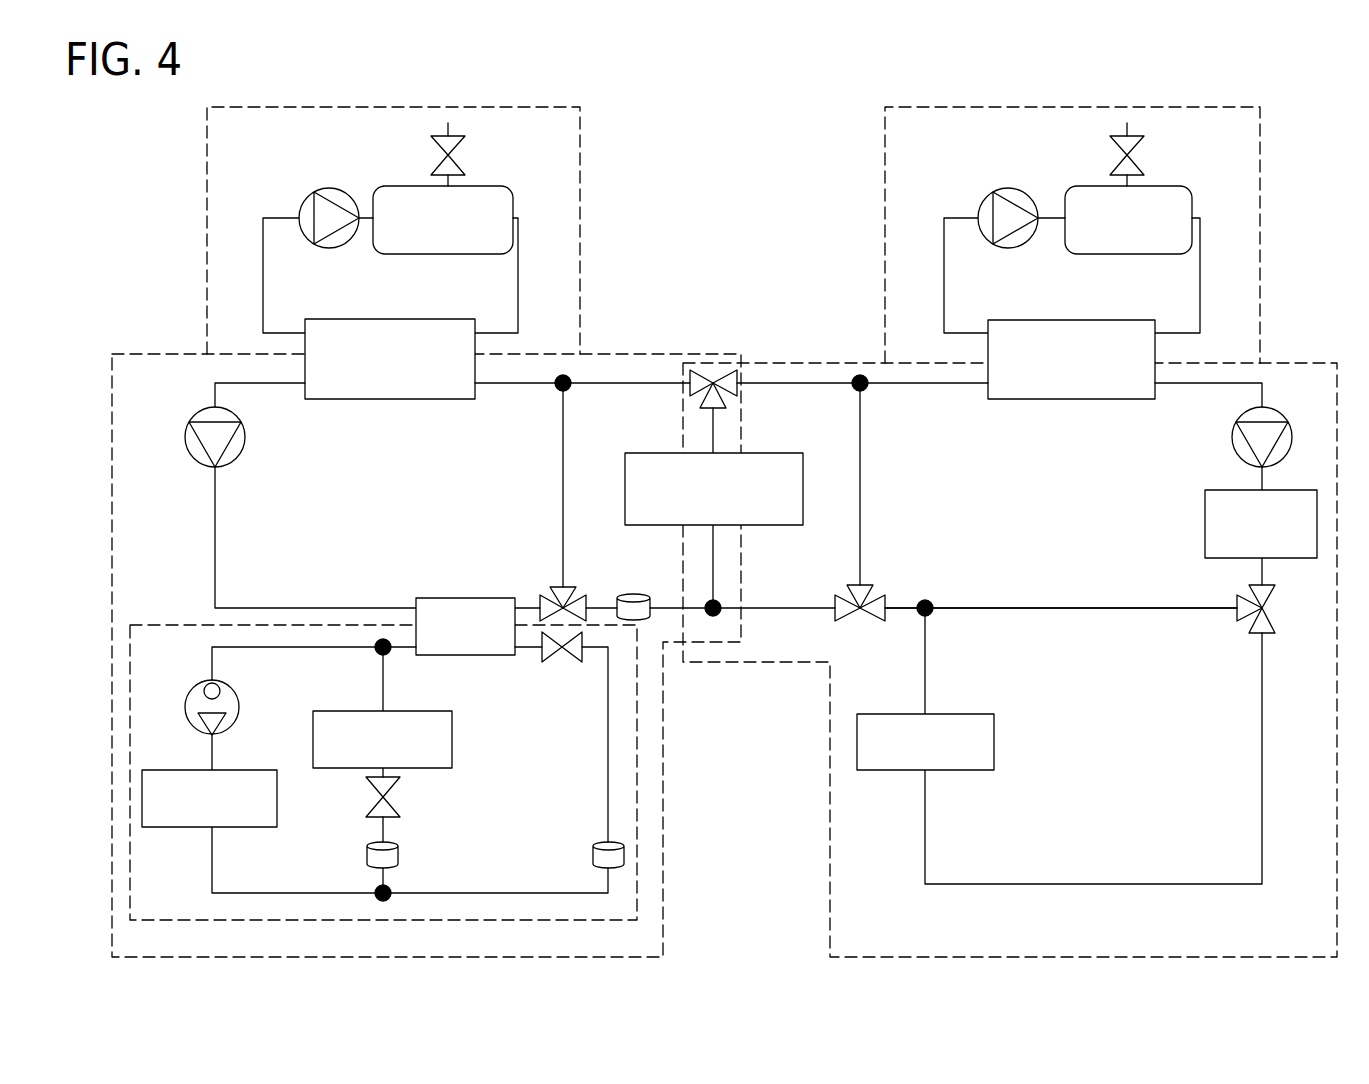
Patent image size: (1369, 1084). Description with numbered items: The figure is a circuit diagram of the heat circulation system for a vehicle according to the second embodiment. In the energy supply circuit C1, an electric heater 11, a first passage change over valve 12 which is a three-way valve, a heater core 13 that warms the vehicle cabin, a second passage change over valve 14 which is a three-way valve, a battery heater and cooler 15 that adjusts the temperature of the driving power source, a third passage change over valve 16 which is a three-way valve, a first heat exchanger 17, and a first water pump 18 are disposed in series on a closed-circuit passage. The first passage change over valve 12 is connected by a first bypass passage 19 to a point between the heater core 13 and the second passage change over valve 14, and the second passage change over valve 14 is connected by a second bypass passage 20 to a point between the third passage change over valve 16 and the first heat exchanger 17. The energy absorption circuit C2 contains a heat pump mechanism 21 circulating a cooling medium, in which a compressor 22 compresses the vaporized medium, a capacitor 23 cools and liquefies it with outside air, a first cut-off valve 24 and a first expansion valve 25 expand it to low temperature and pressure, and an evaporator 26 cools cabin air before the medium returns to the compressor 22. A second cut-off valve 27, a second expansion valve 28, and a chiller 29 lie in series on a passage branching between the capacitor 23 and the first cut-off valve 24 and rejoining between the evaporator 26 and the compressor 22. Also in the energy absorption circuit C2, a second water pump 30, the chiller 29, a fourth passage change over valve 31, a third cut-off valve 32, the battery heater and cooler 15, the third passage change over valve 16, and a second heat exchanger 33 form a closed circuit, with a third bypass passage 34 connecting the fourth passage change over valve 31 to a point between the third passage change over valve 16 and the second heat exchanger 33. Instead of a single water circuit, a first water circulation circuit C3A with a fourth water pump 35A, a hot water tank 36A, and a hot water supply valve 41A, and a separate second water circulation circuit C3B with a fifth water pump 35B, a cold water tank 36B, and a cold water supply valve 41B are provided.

The electric heater 11 is at (1205, 527).
The first passage change over valve 12 is at (1270, 615).
The heater core 13 is at (970, 714).
The second passage change over valve 14 is at (875, 595).
The battery heater and cooler 15 is at (762, 453).
The third passage change over valve 16 is at (713, 383).
The first heat exchanger 17 is at (1050, 399).
The first water pump 18 is at (1232, 437).
The first bypass passage 19 is at (1068, 608).
The second bypass passage 20 is at (860, 478).
The heat pump mechanism 21 is at (170, 625).
The compressor 22 is at (233, 690).
The capacitor 23 is at (238, 770).
The first cut-off valve 24 is at (398, 857).
The first expansion valve 25 is at (395, 790).
The evaporator 26 is at (452, 727).
The second cut-off valve 27 is at (593, 856).
The second expansion valve 28 is at (566, 662).
The chiller 29 is at (445, 598).
The second water pump 30 is at (244, 447).
The fourth passage change over valve 31 is at (555, 598).
The third cut-off valve 32 is at (630, 593).
The second heat exchanger 33 is at (395, 399).
The third bypass passage 34 is at (563, 478).
The fourth water pump 35A is at (1008, 188).
The fifth water pump 35B is at (329, 188).
The hot water tank 36A is at (1160, 186).
The cold water tank 36B is at (480, 186).
The hot water supply valve 41A is at (1118, 152).
The cold water supply valve 41B is at (440, 152).
The energy supply circuit C1 is at (829, 780).
The energy absorption circuit C2 is at (663, 812).
The first water circulation circuit C3A is at (1185, 107).
The second water circulation circuit C3B is at (505, 107).